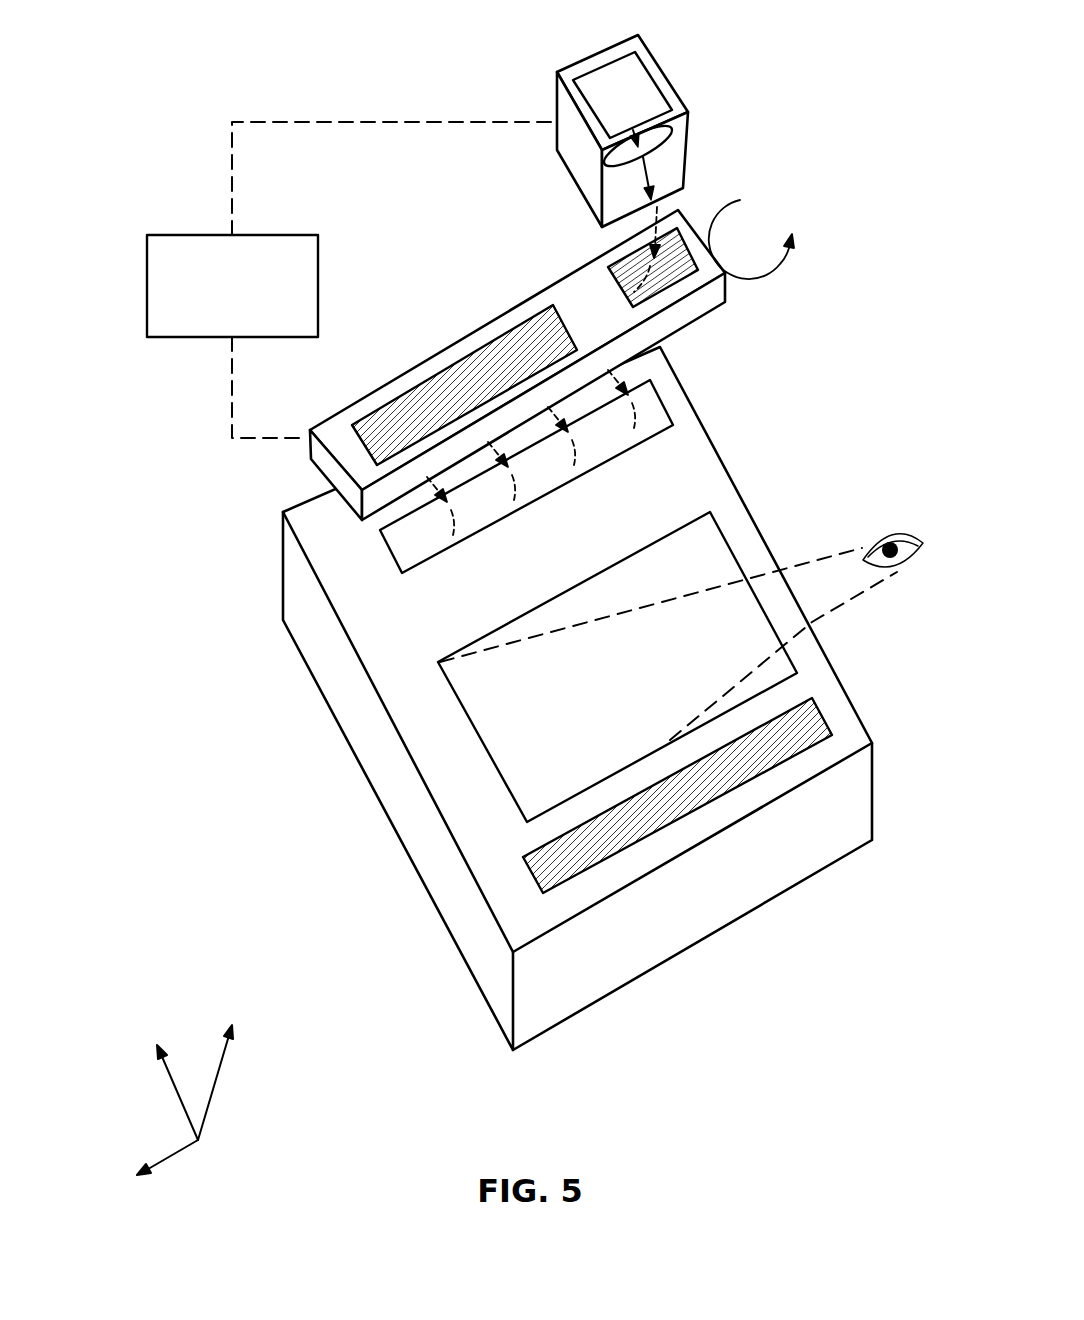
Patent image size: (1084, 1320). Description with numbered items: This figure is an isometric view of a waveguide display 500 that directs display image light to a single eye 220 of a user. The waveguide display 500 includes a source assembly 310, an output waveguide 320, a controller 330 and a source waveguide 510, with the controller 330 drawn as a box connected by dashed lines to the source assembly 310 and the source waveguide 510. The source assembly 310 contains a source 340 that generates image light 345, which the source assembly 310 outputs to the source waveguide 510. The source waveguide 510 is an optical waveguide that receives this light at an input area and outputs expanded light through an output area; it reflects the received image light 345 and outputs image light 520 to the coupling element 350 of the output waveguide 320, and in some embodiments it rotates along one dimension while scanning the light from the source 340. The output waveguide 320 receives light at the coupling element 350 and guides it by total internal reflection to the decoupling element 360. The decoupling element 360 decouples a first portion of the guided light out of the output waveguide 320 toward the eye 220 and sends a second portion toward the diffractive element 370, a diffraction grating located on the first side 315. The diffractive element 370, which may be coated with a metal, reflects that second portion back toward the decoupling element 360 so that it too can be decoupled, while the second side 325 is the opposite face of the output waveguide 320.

The waveguide display 500 is at (504, 616).
The source assembly 310 is at (673, 131).
The source 340 is at (622, 75).
The image light 345 is at (660, 210).
The controller 330 is at (352, 280).
The source waveguide 510 is at (323, 482).
The coupling element 350 is at (390, 553).
The image light 520 is at (632, 400).
The first side 315 is at (660, 473).
The eye 220 is at (681, 620).
The output waveguide 320 is at (509, 748).
The decoupling element 360 is at (485, 747).
The diffractive element 370 is at (683, 787).
The second side 325 is at (590, 1016).